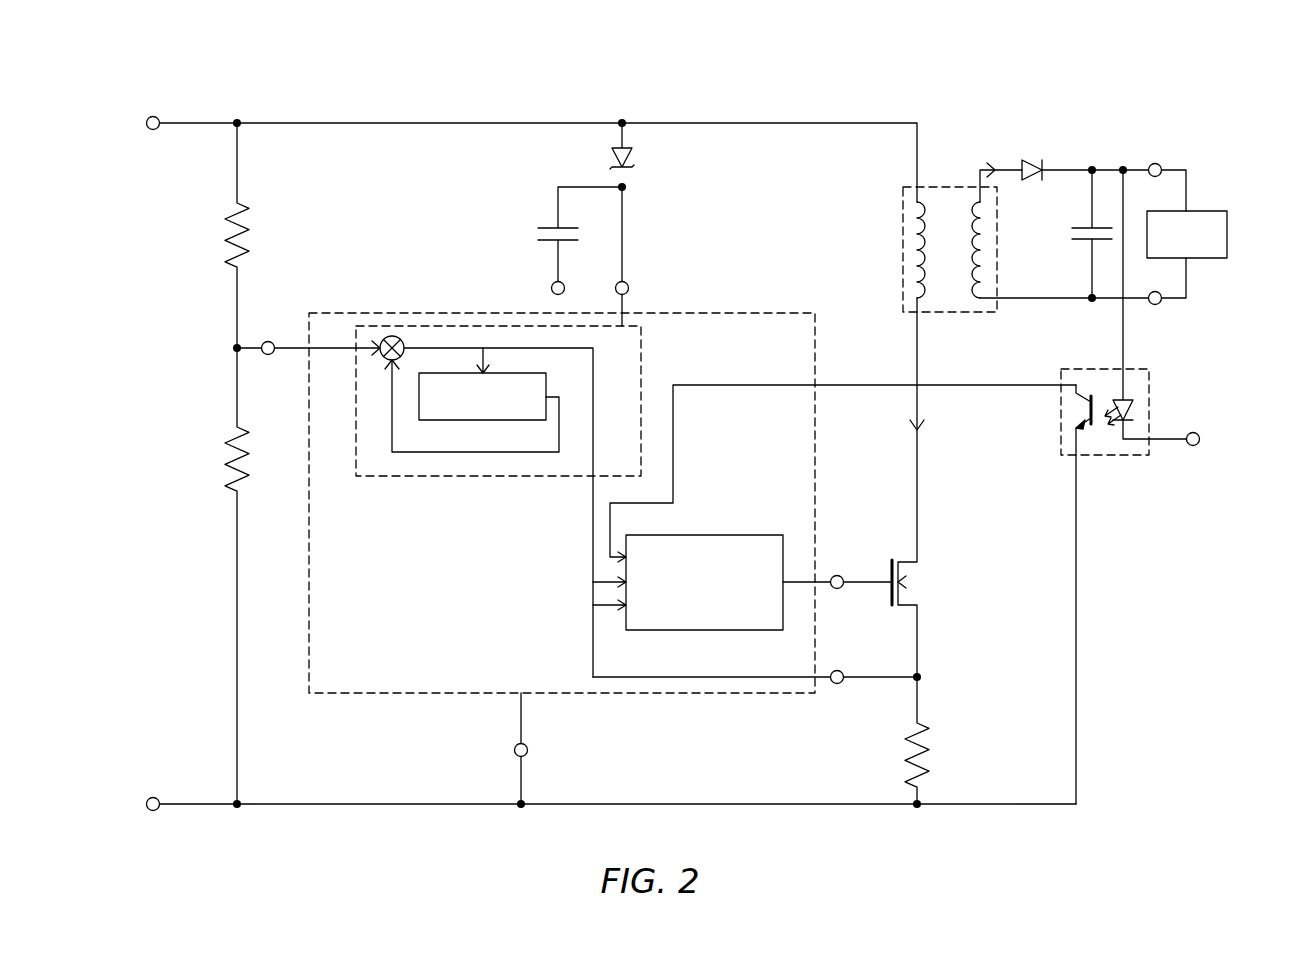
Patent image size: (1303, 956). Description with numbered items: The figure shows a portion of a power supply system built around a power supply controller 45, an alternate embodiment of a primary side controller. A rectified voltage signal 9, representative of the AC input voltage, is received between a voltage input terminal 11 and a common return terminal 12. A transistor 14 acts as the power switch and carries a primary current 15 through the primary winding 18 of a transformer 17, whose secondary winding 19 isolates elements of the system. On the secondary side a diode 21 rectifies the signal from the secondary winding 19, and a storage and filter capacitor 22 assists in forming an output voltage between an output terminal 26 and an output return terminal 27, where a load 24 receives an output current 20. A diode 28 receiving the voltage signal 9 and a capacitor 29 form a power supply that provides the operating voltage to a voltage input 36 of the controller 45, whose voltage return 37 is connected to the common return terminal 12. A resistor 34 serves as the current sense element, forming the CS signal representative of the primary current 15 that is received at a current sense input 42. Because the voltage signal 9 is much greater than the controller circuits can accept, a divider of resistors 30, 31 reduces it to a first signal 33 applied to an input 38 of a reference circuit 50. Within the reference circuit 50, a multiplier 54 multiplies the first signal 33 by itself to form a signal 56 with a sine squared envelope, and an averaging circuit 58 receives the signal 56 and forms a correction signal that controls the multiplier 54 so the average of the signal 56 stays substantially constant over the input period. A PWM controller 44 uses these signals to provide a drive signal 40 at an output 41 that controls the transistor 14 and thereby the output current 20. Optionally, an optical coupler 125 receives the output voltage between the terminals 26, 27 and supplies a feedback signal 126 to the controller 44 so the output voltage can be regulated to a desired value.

The voltage signal 9 is at (194, 127).
The voltage input terminal 11 is at (149, 118).
The common return terminal 12 is at (151, 811).
The transistor 14 is at (923, 578).
The primary current 15 is at (930, 431).
The transformer 17 is at (943, 185).
The primary winding 18 is at (915, 242).
The secondary winding 19 is at (982, 243).
The output current 20 is at (994, 158).
The diode 21 is at (1035, 160).
The storage and filter capacitor 22 is at (1086, 247).
The load 24 is at (1210, 210).
The output terminal 26 is at (1160, 163).
The output return terminal 27 is at (1158, 305).
The diode 28 is at (636, 165).
The capacitor 29 is at (551, 222).
The resistor 30 is at (226, 232).
The resistor 31 is at (226, 452).
The first signal 33 is at (325, 350).
The resistor 34 is at (931, 757).
The voltage input 36 is at (630, 285).
The voltage return 37 is at (514, 752).
The input 38 is at (272, 340).
The drive signal 40 is at (803, 573).
The output 41 is at (843, 573).
The current sense input 42 is at (840, 687).
The controller 44 is at (688, 535).
The power supply controller 45 is at (683, 694).
The reference circuit 50 is at (645, 398).
The multiplier 54 is at (384, 338).
The signal 56 is at (595, 422).
The averaging circuit 58 is at (455, 421).
The optical coupler 125 is at (1100, 456).
The feedback line 126 is at (978, 385).